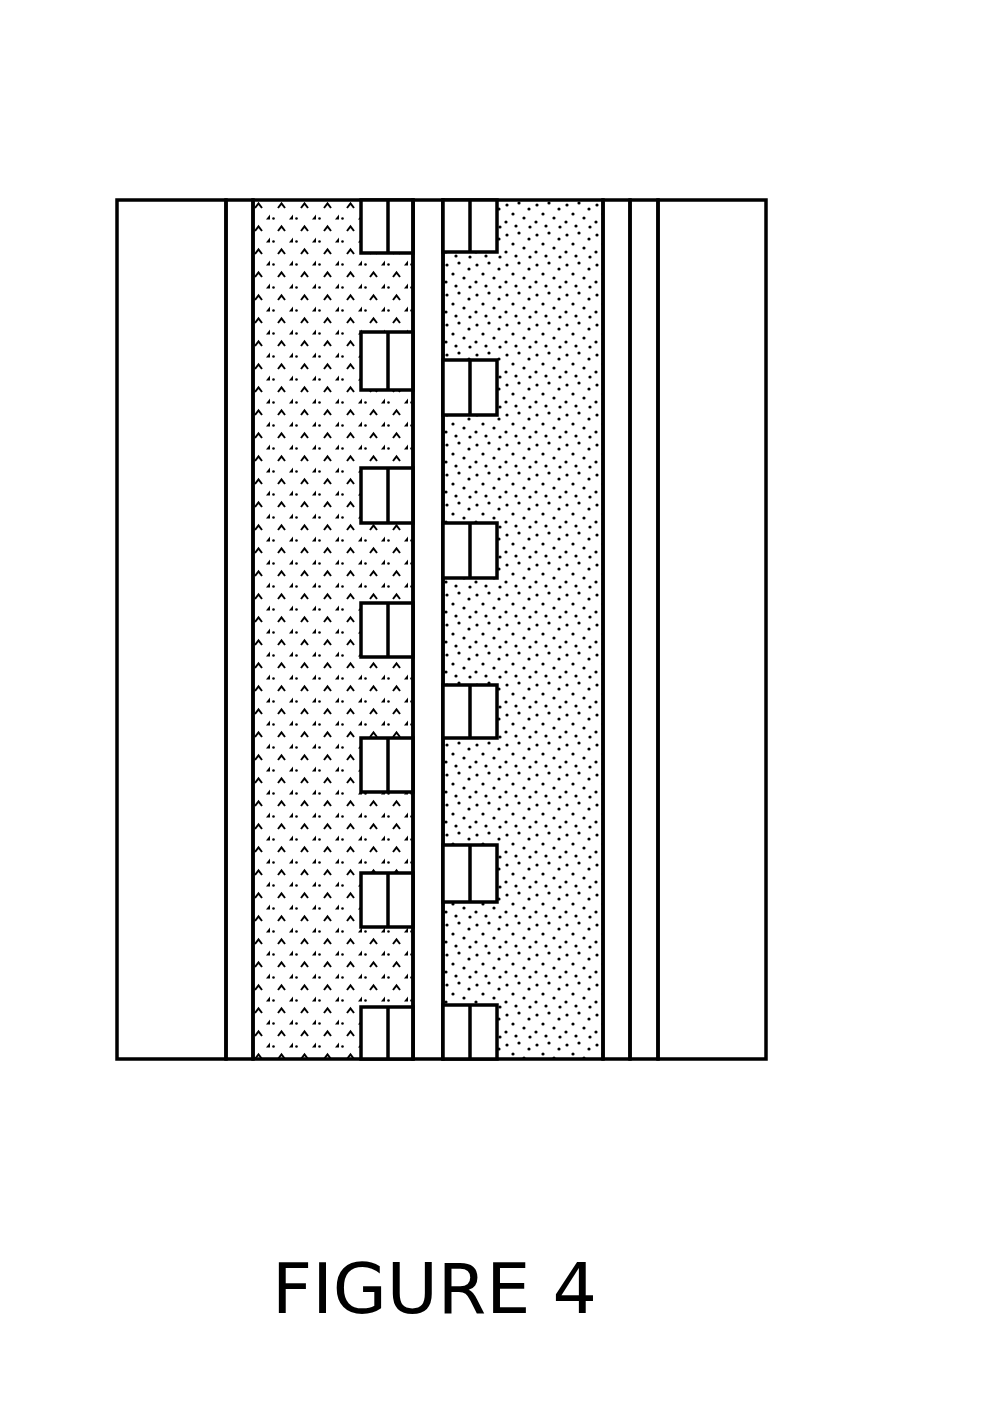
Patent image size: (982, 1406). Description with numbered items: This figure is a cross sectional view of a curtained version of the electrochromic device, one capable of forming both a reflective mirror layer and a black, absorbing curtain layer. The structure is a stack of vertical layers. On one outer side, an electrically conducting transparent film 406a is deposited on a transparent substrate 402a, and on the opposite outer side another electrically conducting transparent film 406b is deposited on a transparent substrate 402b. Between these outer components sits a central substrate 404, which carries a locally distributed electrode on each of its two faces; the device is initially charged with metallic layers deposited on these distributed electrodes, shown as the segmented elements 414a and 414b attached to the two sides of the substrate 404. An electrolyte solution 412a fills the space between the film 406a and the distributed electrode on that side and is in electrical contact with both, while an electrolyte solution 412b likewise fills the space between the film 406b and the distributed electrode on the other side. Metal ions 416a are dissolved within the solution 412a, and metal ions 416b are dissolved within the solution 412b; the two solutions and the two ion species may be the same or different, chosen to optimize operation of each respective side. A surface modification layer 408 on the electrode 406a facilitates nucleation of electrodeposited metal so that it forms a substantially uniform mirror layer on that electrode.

The transparent substrate 402a is at (716, 232).
The transparent substrate 402b is at (165, 210).
The substrate 404 is at (426, 210).
The electrically conducting transparent film 406a is at (645, 210).
The electrically conducting transparent film 406b is at (240, 210).
The surface modification layer 408 is at (615, 210).
The electrolyte solution 412a is at (575, 1022).
The electrolyte solution 412b is at (282, 1035).
The first electrode elements 414a is at (487, 1040).
The second electrode elements 414b is at (380, 1047).
The metal ions 416a is at (530, 243).
The metal ions 416b is at (315, 292).